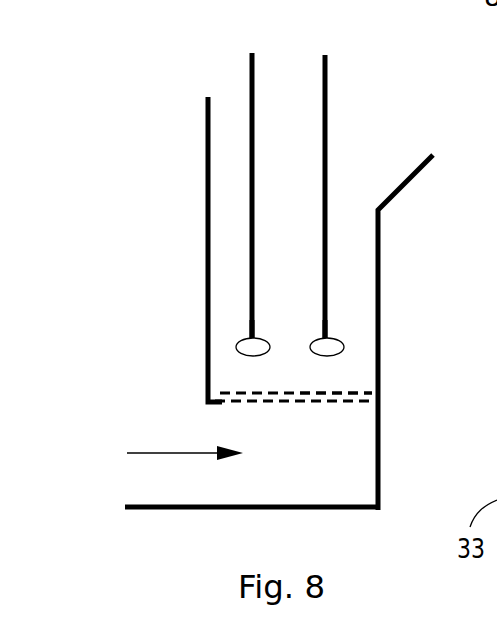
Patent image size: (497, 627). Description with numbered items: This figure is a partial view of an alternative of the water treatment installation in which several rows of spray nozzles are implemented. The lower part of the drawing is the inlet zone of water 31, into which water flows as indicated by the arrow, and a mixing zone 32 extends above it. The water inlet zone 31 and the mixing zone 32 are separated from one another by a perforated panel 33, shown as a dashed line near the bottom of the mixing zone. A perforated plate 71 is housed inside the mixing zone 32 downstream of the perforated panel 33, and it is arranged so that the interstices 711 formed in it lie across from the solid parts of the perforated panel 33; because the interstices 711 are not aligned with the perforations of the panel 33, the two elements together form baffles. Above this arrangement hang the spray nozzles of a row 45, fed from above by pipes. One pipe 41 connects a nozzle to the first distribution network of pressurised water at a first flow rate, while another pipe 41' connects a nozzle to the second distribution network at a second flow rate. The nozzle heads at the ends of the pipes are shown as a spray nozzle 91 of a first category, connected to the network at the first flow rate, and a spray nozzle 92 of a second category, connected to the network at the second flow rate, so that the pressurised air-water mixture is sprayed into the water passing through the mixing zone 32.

The inlet zone of water 31 is at (200, 490).
The mixing zone 32 is at (224, 380).
The perforated panel 33 is at (210, 403).
The pipe 41 is at (396, 196).
The pipe 41' is at (321, 180).
The row of spray nozzles 45 is at (265, 328).
The perforated plate 71 is at (360, 391).
The interstices 711 is at (341, 372).
The spray nozzle of a first category 91 is at (341, 332).
The spray nozzle of a second category 92 is at (242, 338).